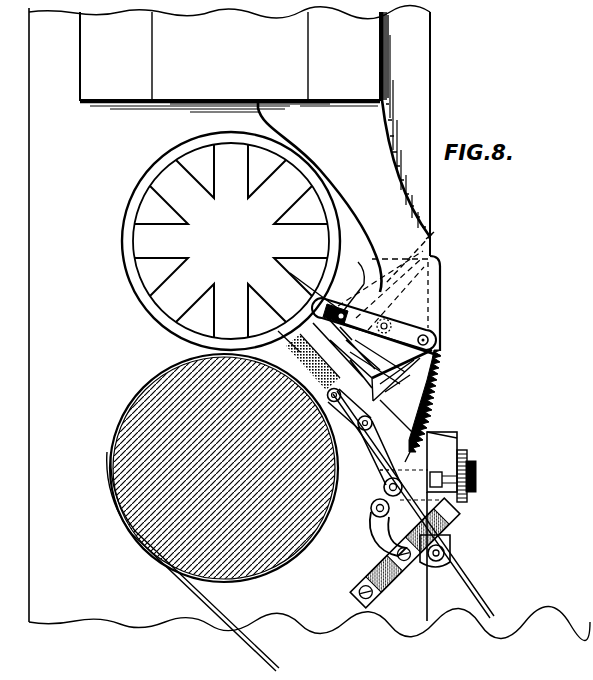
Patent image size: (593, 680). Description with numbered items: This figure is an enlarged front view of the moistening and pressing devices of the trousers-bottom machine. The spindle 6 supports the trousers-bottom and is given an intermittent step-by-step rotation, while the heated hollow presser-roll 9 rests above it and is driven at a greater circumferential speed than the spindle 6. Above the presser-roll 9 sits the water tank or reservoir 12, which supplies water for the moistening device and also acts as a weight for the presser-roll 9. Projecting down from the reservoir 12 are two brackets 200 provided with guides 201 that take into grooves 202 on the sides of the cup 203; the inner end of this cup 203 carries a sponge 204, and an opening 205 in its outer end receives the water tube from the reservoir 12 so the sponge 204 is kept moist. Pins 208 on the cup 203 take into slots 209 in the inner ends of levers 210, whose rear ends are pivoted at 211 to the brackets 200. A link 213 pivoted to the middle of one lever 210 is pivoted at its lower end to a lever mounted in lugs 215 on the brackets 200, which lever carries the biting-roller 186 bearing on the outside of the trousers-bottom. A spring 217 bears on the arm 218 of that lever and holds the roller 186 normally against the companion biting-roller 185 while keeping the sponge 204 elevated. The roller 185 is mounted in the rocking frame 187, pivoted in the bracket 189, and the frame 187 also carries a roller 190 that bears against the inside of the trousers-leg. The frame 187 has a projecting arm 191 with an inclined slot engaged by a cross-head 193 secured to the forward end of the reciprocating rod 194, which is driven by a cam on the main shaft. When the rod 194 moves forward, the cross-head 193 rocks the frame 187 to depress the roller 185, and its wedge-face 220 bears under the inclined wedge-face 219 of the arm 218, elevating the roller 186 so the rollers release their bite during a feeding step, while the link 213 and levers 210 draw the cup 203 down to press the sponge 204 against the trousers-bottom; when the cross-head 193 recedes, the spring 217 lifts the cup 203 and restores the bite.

The spindle 6 is at (156, 418).
The hollow presser-roll 9 is at (231, 241).
The water tank or reservoir 12 is at (230, 62).
The biting-roller 185 is at (372, 511).
The biting-roller 186 is at (383, 487).
The rocking frame 187 is at (382, 536).
The bracket 189 is at (402, 575).
The roller 190 is at (442, 567).
The projecting arm 191 is at (472, 467).
The cross-head 193 is at (457, 454).
The reciprocating rod 194 is at (436, 472).
The brackets 200 is at (320, 196).
The guides 201 is at (433, 262).
The grooves 202 is at (340, 350).
The cup 203 is at (355, 281).
The sponge 204 is at (275, 333).
The opening 205 is at (449, 222).
The pins 208 is at (333, 310).
The slots 209 is at (314, 287).
The levers 210 is at (400, 330).
The pivot 211 is at (431, 341).
The link 213 is at (359, 351).
The lugs 215 is at (374, 401).
The spring 217 is at (443, 380).
The arm 218 is at (371, 410).
The inclined wedge-face 219 is at (419, 492).
The wedge-face 220 is at (379, 453).